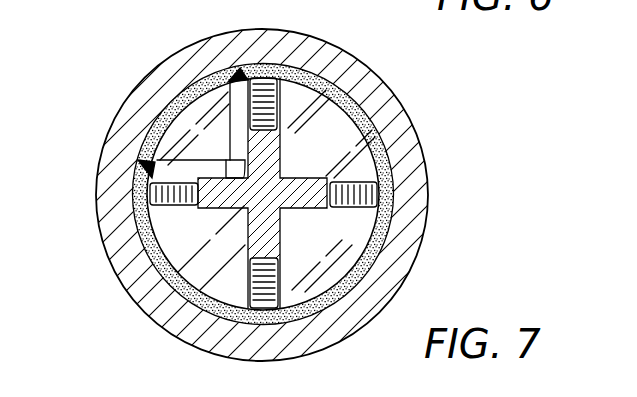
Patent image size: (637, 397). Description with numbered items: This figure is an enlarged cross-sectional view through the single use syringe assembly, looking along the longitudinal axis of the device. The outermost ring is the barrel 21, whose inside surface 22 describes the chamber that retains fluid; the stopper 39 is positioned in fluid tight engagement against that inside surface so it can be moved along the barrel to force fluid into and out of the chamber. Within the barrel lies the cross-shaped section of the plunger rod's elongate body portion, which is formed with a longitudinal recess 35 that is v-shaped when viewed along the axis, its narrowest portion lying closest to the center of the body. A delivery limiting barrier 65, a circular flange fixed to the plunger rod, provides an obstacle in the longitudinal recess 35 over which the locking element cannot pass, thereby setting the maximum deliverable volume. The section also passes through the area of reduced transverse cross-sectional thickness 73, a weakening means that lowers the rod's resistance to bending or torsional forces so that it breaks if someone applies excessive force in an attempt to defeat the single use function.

The barrel 21 is at (368, 78).
The inside surface 22 is at (377, 128).
The stopper 39 is at (388, 173).
The longitudinal recess 35 is at (187, 128).
The delivery limiting barrier 65 is at (207, 97).
The area of reduced transverse cross-sectional thickness 73 is at (268, 168).